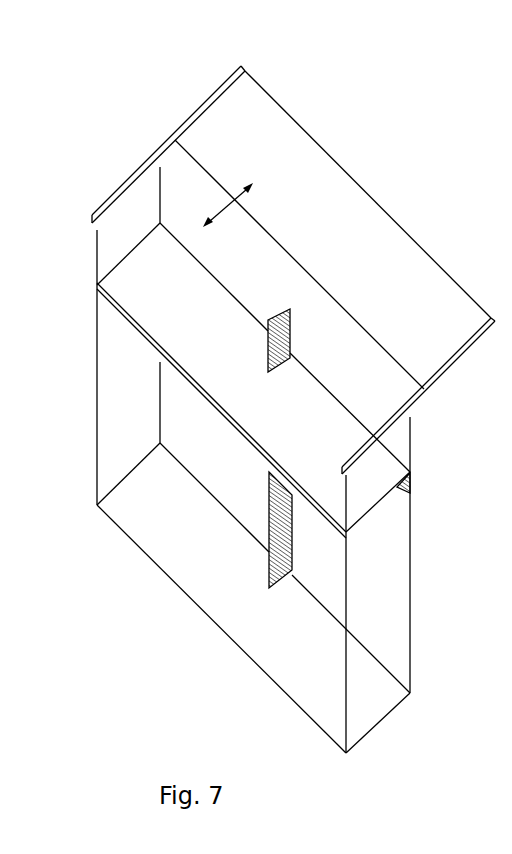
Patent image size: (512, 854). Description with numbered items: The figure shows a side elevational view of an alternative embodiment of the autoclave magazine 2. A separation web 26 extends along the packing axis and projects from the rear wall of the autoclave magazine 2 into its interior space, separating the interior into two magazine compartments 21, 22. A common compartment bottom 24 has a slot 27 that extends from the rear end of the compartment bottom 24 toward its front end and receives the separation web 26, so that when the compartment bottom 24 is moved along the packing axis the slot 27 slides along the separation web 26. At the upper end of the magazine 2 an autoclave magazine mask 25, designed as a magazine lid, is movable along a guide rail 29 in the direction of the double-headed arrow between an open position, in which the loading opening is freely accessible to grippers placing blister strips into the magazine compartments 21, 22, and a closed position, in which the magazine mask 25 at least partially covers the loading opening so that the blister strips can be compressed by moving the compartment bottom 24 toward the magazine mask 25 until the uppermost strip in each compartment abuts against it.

The autoclave magazine 2 is at (147, 607).
The magazine compartment 21 is at (190, 455).
The magazine compartment 22 is at (375, 600).
The common compartment bottom 24 is at (372, 493).
The autoclave magazine mask 25 is at (370, 248).
The separation web 26 is at (268, 352).
The slot 27 is at (268, 567).
The guide rail 29 is at (143, 157).